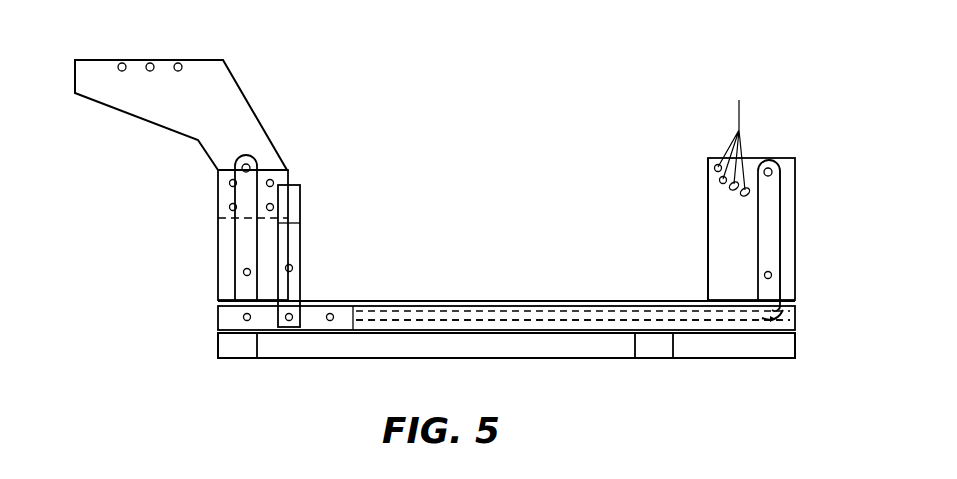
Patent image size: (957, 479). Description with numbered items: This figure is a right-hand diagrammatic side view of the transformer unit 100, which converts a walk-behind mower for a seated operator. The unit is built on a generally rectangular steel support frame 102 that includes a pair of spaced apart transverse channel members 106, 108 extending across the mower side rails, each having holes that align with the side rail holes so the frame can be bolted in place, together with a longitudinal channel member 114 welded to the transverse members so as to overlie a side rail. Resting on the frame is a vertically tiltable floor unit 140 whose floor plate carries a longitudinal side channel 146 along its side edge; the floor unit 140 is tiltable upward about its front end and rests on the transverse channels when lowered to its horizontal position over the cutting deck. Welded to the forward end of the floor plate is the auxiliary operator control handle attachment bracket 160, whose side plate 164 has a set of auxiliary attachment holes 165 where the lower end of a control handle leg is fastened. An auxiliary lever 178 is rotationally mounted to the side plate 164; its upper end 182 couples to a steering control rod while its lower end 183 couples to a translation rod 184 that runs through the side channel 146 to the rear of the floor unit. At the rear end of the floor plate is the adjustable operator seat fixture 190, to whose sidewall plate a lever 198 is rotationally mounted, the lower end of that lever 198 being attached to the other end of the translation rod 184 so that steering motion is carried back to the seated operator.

The transformer unit 100 is at (440, 160).
The support frame 102 is at (218, 350).
The transverse channel member 106 is at (657, 346).
The transverse channel member 108 is at (243, 345).
The longitudinal channel member 114 is at (750, 348).
The floor unit 140 is at (425, 297).
The longitudinal side channel 146 is at (510, 300).
The auxiliary operator control handle attachment bracket 160 is at (707, 197).
The side plate 164 is at (720, 240).
The auxiliary attachment holes 165 is at (739, 138).
The auxiliary lever 178 is at (772, 212).
The upper end of lever 182 is at (775, 160).
The lower end of lever 183 is at (783, 313).
The translation rod 184 is at (595, 303).
The adjustable operator seat fixture 190 is at (158, 125).
The lever 198 is at (242, 245).